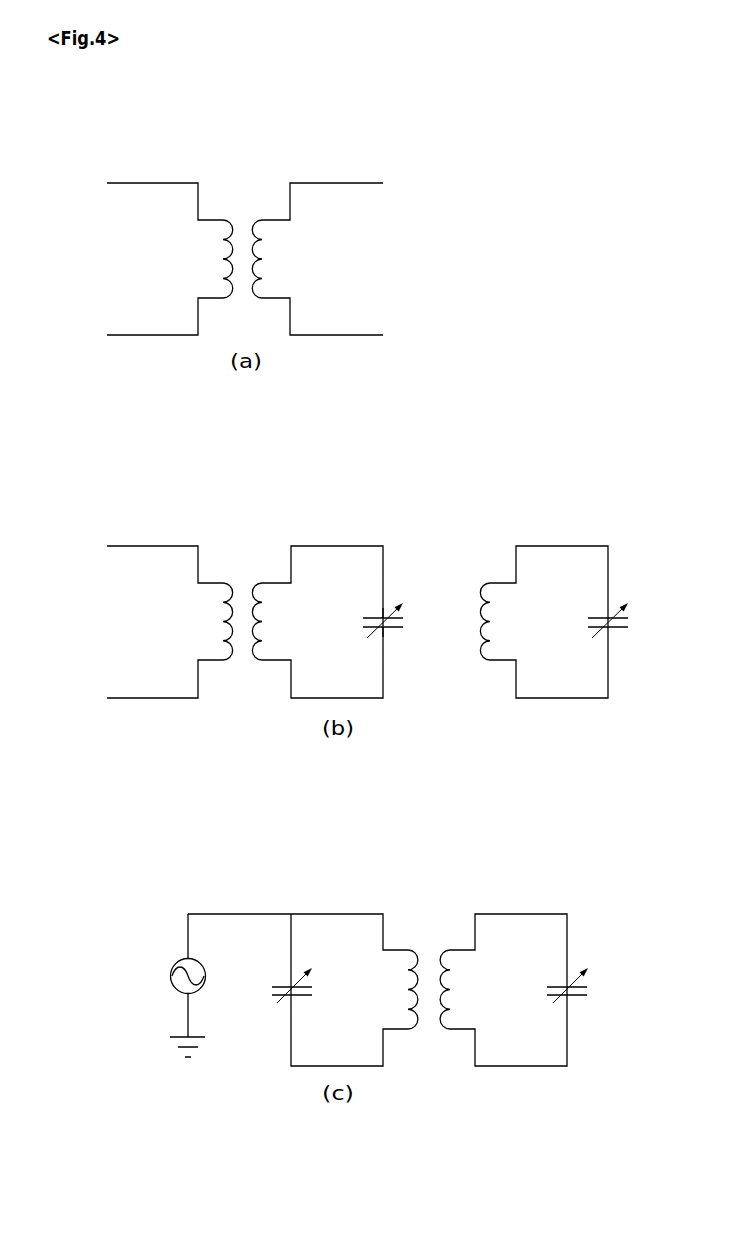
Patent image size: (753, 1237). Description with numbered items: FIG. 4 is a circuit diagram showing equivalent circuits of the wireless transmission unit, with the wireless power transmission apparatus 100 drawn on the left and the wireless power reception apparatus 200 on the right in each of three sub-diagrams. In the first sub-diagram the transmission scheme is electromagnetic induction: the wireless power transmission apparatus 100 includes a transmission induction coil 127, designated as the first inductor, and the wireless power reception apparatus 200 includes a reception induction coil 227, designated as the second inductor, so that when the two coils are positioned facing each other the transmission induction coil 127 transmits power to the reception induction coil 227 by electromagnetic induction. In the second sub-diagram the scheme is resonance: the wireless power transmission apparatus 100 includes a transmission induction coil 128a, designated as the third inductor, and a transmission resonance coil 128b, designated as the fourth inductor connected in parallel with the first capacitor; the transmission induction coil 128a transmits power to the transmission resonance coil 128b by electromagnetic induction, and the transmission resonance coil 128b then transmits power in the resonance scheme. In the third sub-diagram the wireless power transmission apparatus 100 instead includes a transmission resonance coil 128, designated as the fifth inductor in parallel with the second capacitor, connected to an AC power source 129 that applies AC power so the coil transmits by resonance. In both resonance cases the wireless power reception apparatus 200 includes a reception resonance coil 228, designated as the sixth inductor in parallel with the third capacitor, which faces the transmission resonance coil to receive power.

The wireless power transmission apparatus 100 is at (104, 155).
The wireless power reception apparatus 200 is at (387, 155).
The transmission induction coil 127 is at (152, 182).
The reception induction coil 227 is at (337, 182).
The transmission induction coil 128a is at (152, 545).
The transmission resonance coil 128b is at (337, 545).
The transmission resonance coil 128 is at (337, 913).
The reception resonance coil 228 is at (562, 545).
The AC power source 129 is at (171, 966).